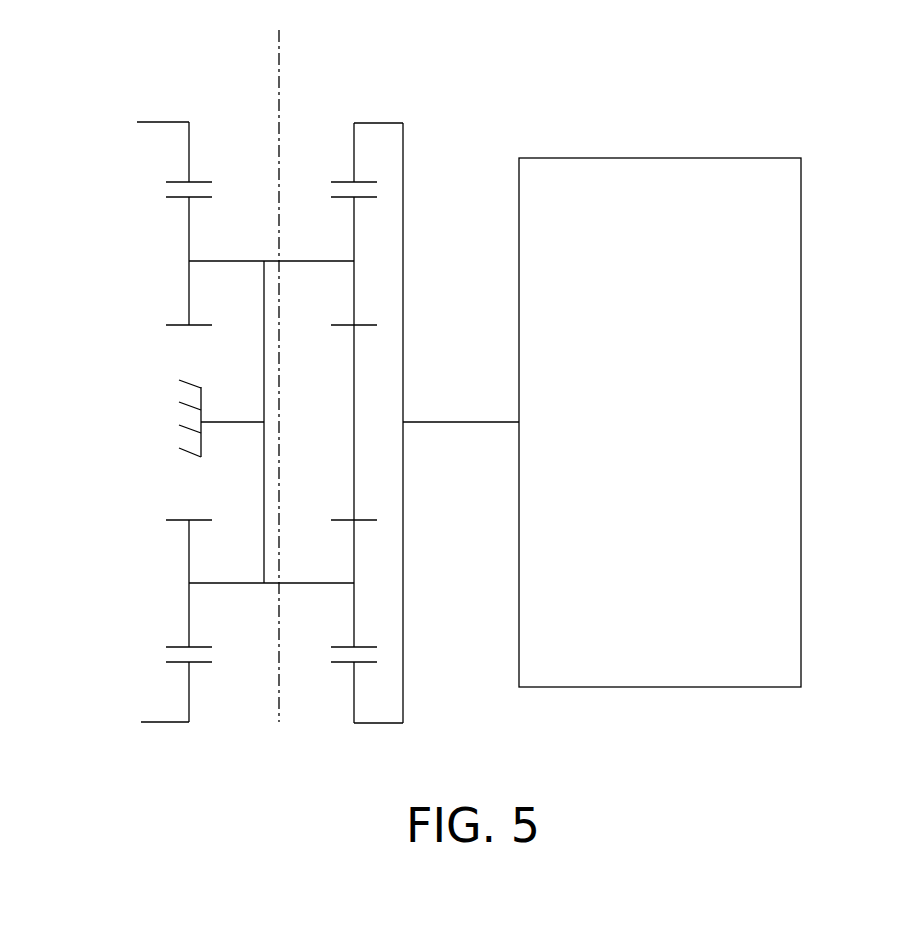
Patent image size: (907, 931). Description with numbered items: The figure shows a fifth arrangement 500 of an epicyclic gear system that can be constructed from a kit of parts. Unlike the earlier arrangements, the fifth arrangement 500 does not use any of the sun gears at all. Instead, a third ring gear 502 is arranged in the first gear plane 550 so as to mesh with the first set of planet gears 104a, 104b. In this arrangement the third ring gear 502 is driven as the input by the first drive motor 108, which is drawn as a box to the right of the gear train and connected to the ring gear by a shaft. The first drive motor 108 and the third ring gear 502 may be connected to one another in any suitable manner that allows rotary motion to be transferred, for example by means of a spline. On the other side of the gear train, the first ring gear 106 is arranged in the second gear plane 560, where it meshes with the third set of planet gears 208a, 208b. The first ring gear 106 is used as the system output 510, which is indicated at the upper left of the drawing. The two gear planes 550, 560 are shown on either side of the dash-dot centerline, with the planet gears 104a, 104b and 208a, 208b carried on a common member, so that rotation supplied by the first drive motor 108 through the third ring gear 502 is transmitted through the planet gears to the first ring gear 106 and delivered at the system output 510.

The fifth arrangement 500 is at (813, 120).
The system output 510 is at (120, 121).
The first gear plane 550 is at (397, 395).
The second gear plane 560 is at (164, 396).
The first ring gear 106 is at (200, 181).
The third set of planet gears 208a is at (188, 227).
The third set of planet gears 208b is at (189, 557).
The first set of planet gears 104a is at (355, 228).
The first set of planet gears 104b is at (355, 557).
The third ring gear 502 is at (378, 722).
The first drive motor 108 is at (802, 423).